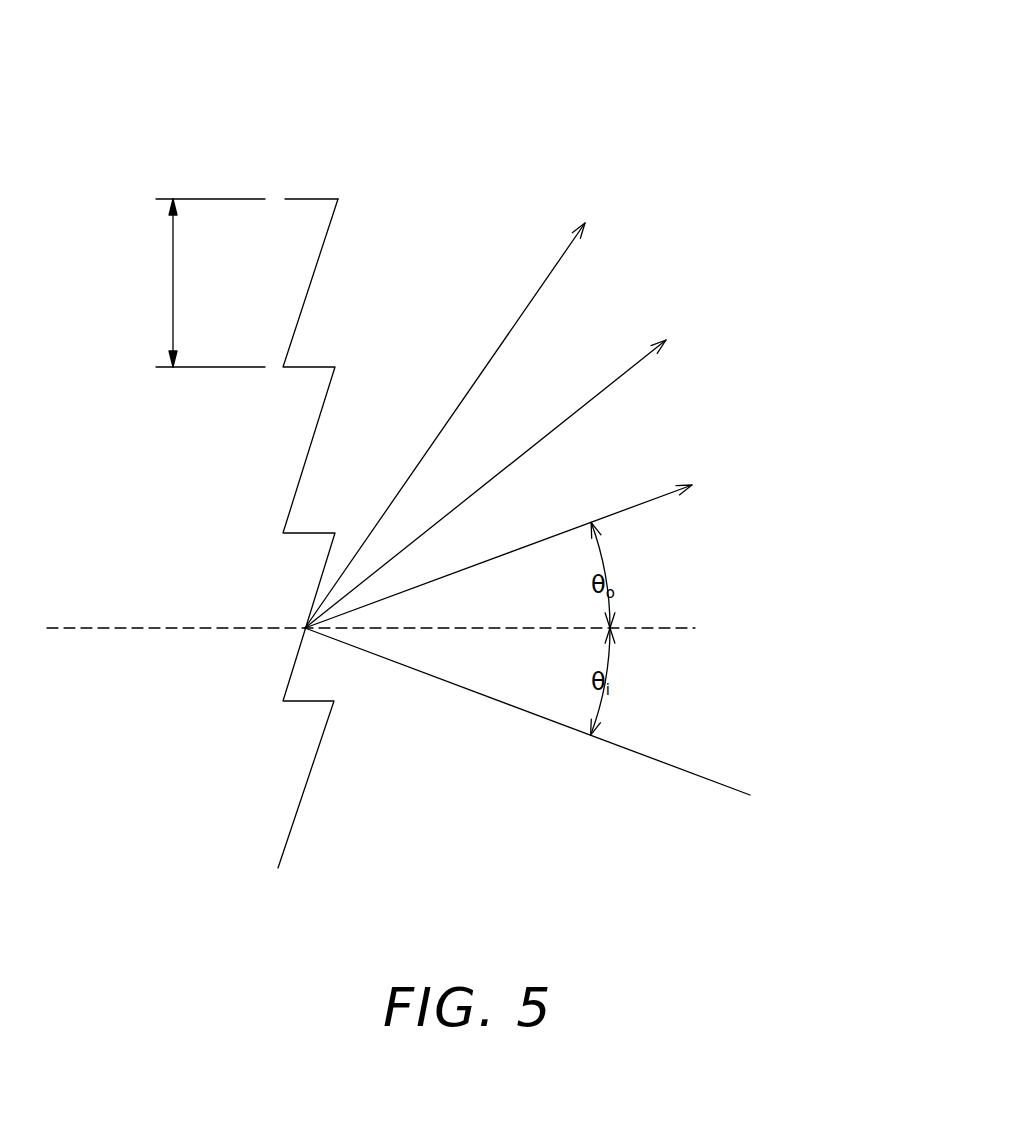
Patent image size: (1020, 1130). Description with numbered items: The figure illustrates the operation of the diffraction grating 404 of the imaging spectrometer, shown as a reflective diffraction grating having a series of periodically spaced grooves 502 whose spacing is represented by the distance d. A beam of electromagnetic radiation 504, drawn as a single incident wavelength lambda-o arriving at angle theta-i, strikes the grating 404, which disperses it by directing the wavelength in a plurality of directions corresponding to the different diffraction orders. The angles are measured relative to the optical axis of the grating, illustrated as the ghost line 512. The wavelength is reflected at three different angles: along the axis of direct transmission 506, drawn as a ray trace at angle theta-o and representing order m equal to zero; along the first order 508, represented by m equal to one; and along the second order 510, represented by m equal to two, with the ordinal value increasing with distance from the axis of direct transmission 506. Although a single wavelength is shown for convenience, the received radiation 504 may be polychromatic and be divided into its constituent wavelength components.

The diffraction grating 404 is at (530, 81).
The grooves 502 is at (310, 199).
The beam of electromagnetic radiation 504 is at (653, 756).
The axis of direct transmission 506 is at (653, 496).
The first order 508 is at (638, 358).
The second order 510 is at (562, 250).
The ghost line 512 is at (665, 628).